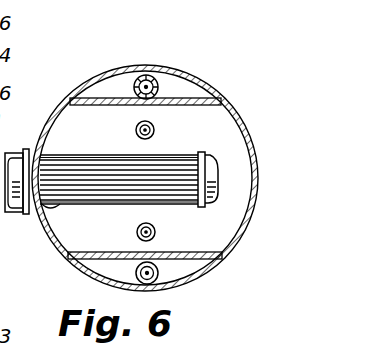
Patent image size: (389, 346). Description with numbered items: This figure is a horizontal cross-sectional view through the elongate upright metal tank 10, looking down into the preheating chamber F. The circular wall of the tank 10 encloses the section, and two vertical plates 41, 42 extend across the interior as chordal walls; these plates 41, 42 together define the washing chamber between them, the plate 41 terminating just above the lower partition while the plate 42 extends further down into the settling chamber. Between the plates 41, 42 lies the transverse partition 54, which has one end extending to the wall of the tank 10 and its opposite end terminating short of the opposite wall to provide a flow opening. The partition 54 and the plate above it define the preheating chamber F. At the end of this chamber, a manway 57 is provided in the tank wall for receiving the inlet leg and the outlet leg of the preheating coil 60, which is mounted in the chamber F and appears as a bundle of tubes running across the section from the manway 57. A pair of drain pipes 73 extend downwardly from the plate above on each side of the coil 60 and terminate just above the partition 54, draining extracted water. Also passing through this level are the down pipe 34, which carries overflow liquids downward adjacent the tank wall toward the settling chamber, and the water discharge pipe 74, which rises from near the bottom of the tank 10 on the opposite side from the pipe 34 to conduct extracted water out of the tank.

The tank 10 is at (184, 67).
The down pipe 34 is at (143, 77).
The vertical plate 41 is at (101, 98).
The vertical plate 42 is at (195, 259).
The transverse partition 54 is at (221, 220).
The manway 57 is at (22, 152).
The preheating coil 60 is at (58, 205).
The drain pipes 73 is at (154, 129).
The water discharge pipe 74 is at (158, 277).
The preheating chamber F is at (237, 157).